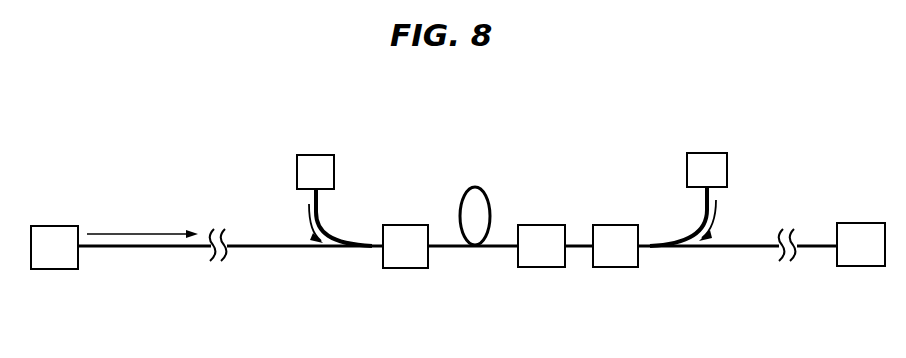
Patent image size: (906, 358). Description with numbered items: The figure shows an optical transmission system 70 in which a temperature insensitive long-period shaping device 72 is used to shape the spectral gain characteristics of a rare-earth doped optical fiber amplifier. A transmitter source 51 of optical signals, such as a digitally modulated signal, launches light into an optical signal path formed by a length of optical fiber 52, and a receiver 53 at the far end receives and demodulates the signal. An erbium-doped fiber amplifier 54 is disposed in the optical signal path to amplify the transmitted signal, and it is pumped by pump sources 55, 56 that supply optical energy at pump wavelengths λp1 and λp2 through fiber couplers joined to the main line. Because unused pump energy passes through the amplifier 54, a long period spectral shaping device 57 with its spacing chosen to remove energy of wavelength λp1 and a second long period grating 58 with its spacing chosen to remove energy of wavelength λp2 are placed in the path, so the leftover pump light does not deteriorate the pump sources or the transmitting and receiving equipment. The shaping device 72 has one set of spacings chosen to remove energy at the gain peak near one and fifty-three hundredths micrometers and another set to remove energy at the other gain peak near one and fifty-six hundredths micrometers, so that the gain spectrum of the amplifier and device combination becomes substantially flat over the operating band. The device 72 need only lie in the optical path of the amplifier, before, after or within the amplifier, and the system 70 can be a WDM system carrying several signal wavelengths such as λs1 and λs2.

The transmitter source 51 is at (55, 226).
The optical fiber 52 is at (121, 248).
The receiver 53 is at (857, 223).
The erbium-doped fiber amplifier 54 is at (480, 188).
The pump source 55 is at (710, 152).
The pump source 56 is at (323, 155).
The long period spectral shaping device 57 is at (404, 270).
The second long period grating 58 is at (614, 268).
The optical transmission system 70 is at (703, 79).
The long-period shaping device 72 is at (540, 268).